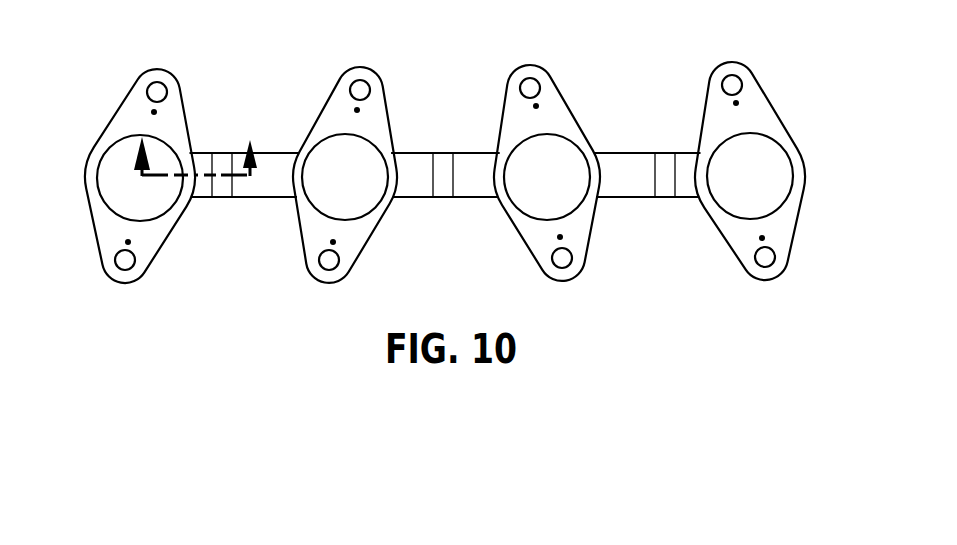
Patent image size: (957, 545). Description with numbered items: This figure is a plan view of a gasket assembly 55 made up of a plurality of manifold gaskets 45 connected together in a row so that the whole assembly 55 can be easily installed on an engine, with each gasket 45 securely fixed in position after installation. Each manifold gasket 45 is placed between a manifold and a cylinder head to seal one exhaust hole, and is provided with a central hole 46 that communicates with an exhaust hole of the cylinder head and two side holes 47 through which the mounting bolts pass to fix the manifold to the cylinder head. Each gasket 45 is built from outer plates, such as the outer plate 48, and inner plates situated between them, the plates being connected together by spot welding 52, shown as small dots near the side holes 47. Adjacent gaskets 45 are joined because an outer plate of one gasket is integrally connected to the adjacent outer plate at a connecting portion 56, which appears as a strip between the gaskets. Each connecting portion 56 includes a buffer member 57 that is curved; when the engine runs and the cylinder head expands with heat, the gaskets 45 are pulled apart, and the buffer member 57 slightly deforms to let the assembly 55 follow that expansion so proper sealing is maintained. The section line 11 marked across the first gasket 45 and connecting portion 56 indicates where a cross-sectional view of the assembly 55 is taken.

The section line 11 is at (188, 153).
The manifold gasket 45 is at (441, 181).
The central hole 46 is at (127, 210).
The side hole 47 is at (524, 86).
The outer plate 48 is at (547, 87).
The spot welding 52 is at (535, 106).
The assembly 55 is at (441, 177).
The connecting portion 56 is at (444, 181).
The buffer member 57 is at (220, 190).